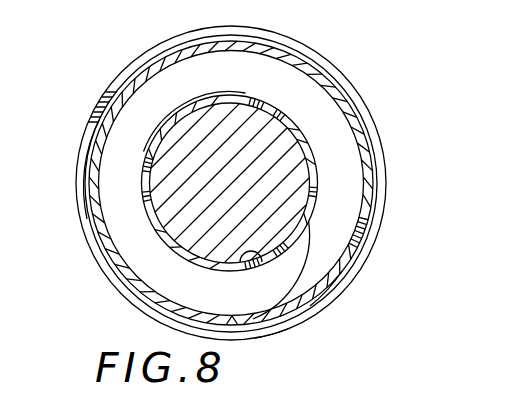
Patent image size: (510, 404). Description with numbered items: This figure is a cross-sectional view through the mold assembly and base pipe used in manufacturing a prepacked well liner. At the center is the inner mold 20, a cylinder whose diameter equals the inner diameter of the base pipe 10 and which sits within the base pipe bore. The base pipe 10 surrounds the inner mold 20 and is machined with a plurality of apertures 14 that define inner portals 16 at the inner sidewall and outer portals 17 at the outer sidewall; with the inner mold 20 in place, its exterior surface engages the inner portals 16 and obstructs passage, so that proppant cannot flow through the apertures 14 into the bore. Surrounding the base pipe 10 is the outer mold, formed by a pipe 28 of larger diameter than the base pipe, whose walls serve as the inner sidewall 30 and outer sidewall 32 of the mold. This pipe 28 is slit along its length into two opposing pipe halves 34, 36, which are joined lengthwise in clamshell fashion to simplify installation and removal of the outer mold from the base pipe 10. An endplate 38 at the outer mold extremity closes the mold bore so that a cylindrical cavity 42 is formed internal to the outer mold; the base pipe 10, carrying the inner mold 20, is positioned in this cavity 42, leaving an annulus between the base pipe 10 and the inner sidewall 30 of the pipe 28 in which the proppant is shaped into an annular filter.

The base pipe 10 is at (312, 187).
The apertures 14 is at (274, 262).
The inner portals 16 is at (240, 266).
The outer portals 17 is at (282, 248).
The inner mold 20 is at (293, 152).
The pipe 28 is at (318, 306).
The inner sidewall 30 is at (100, 159).
The outer sidewall 32 is at (86, 218).
The pipe half 34 is at (142, 64).
The pipe half 36 is at (364, 221).
The endplate 38 is at (378, 150).
The cylindrical cavity 42 is at (273, 302).